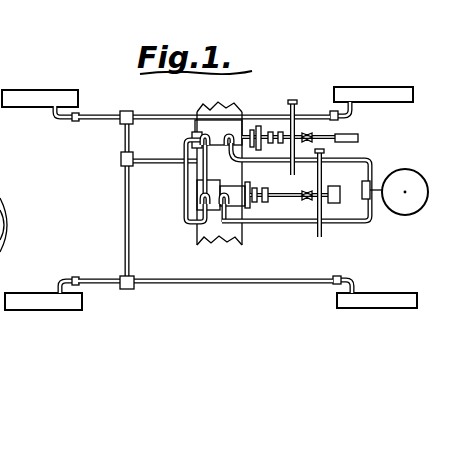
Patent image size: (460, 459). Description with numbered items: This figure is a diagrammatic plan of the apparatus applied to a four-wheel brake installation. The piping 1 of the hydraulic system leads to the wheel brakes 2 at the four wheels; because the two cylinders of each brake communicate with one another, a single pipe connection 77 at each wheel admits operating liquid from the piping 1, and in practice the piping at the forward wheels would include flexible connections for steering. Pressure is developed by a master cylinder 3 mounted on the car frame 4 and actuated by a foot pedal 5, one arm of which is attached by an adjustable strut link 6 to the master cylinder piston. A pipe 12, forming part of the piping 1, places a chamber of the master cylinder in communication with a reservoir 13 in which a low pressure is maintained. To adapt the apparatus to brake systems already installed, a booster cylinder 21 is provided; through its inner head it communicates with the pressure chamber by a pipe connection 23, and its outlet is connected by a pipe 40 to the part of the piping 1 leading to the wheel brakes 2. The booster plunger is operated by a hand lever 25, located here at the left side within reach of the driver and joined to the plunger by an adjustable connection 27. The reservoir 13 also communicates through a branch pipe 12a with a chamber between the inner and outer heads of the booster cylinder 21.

The piping 1 is at (122, 205).
The wheel brakes 2 is at (37, 96).
The master cylinder 3 is at (260, 224).
The car frame 4 is at (240, 238).
The foot pedal 5 is at (336, 204).
The adjustable strut link 6 is at (285, 193).
The pipe 12 is at (318, 238).
The branch pipe 12a is at (325, 188).
The reservoir 13 is at (406, 176).
The booster cylinder 21 is at (203, 150).
The pipe connection 23 is at (182, 187).
The hand lever 25 is at (352, 137).
The adjustable connection 27 is at (278, 135).
The pipe 40 is at (170, 153).
The single pipe connection 77 is at (62, 118).